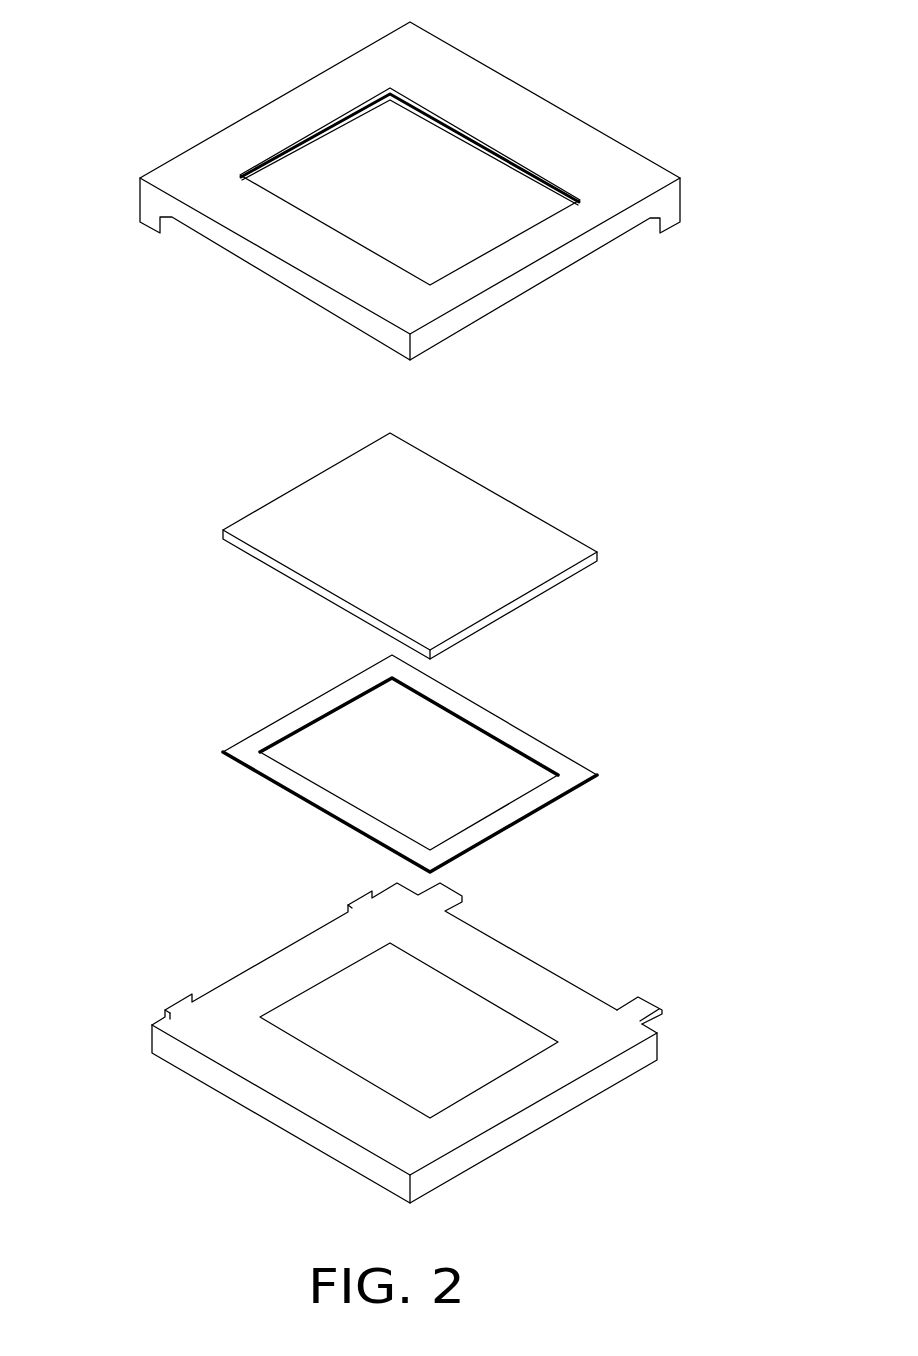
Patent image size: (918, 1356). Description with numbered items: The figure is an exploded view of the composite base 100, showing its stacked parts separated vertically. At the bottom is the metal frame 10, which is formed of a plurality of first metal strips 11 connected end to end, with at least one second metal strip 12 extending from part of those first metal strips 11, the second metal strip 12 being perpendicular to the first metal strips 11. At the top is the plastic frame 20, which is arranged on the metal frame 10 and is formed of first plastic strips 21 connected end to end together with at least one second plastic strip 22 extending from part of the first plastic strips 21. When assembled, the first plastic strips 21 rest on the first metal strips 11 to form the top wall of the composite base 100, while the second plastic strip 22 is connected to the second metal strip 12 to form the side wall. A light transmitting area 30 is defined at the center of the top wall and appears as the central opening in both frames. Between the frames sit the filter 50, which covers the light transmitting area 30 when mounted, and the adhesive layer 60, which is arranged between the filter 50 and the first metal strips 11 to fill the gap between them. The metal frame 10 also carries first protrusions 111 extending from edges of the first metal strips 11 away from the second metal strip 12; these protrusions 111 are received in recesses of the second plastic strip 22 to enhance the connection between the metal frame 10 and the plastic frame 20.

The composite base 100 is at (150, 41).
The plastic frame 20 is at (170, 141).
The first plastic strip 21 is at (532, 245).
The second plastic strip 22 is at (676, 229).
The light transmitting area 30 is at (440, 178).
The filter 50 is at (478, 525).
The adhesive layer 60 is at (535, 747).
The metal frame 10 is at (141, 1001).
The first metal strip 11 is at (310, 970).
The first protrusion 111 is at (644, 1010).
The second metal strip 12 is at (270, 1108).